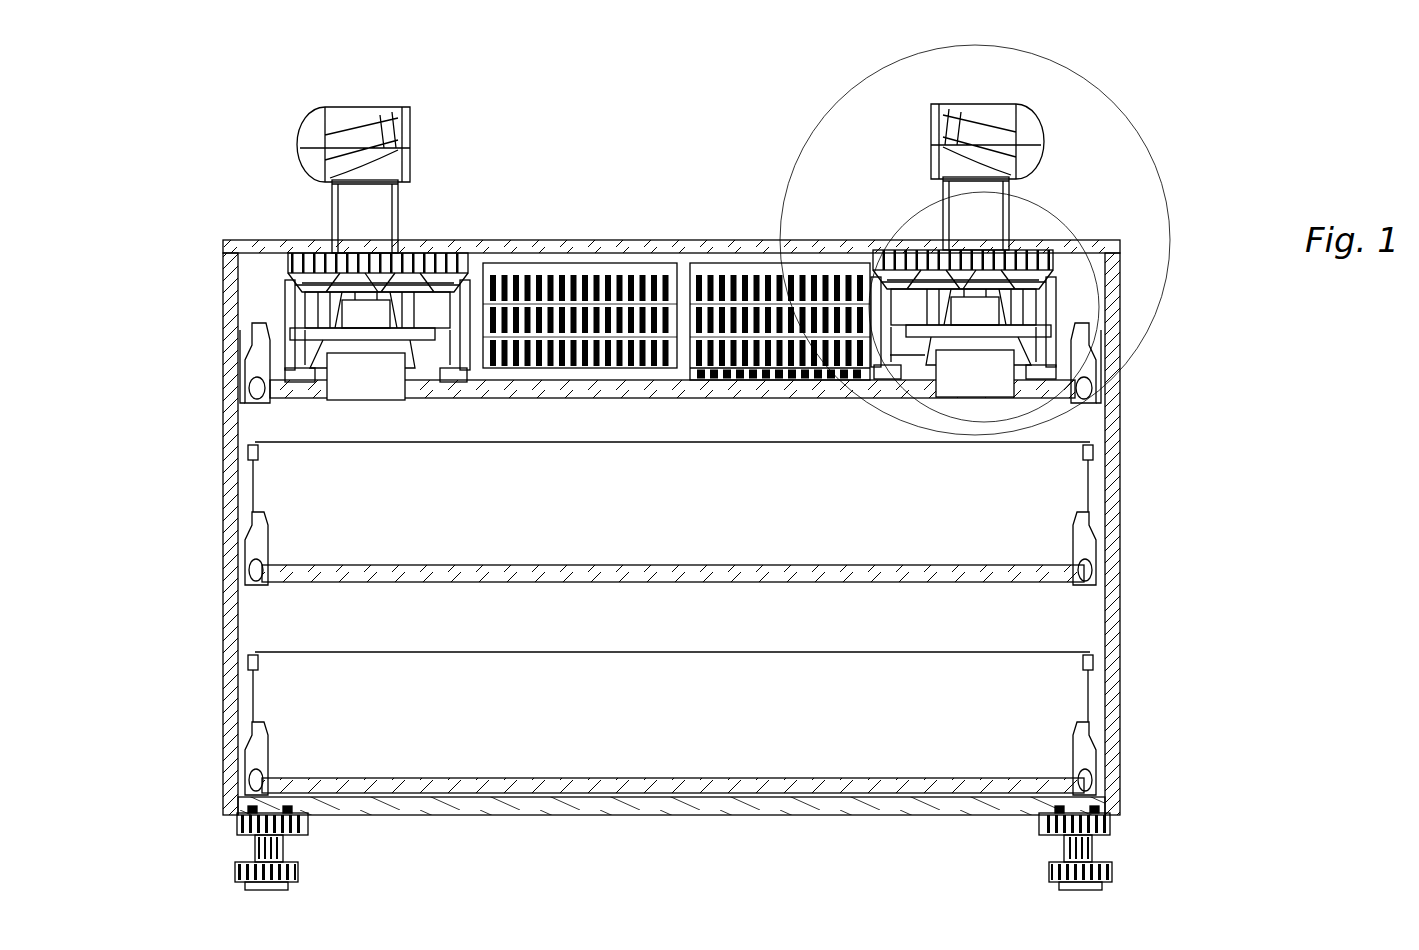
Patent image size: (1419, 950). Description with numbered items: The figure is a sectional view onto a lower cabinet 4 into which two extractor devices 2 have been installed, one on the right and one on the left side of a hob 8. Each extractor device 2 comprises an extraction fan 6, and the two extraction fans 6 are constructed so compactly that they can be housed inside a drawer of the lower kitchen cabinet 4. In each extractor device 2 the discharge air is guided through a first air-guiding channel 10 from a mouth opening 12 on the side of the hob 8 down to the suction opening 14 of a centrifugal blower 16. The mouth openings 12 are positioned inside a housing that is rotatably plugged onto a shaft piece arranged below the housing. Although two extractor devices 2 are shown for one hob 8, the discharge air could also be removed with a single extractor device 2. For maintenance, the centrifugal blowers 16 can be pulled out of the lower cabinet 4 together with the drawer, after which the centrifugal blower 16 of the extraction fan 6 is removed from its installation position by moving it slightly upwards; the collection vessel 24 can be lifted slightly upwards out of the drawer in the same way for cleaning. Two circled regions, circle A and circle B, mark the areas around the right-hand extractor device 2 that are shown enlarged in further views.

The extractor device 2 is at (257, 302).
The lower cabinet 4 is at (1117, 613).
The extraction fan 6 is at (318, 306).
The hob 8 is at (633, 238).
The first air-guiding channel 10 is at (357, 222).
The mouth opening 12 is at (410, 138).
The suction opening 14 is at (338, 262).
The centrifugal blower 16 is at (428, 248).
The collection vessel 24 is at (900, 350).
The circle A is at (1133, 127).
The circle B is at (1075, 227).